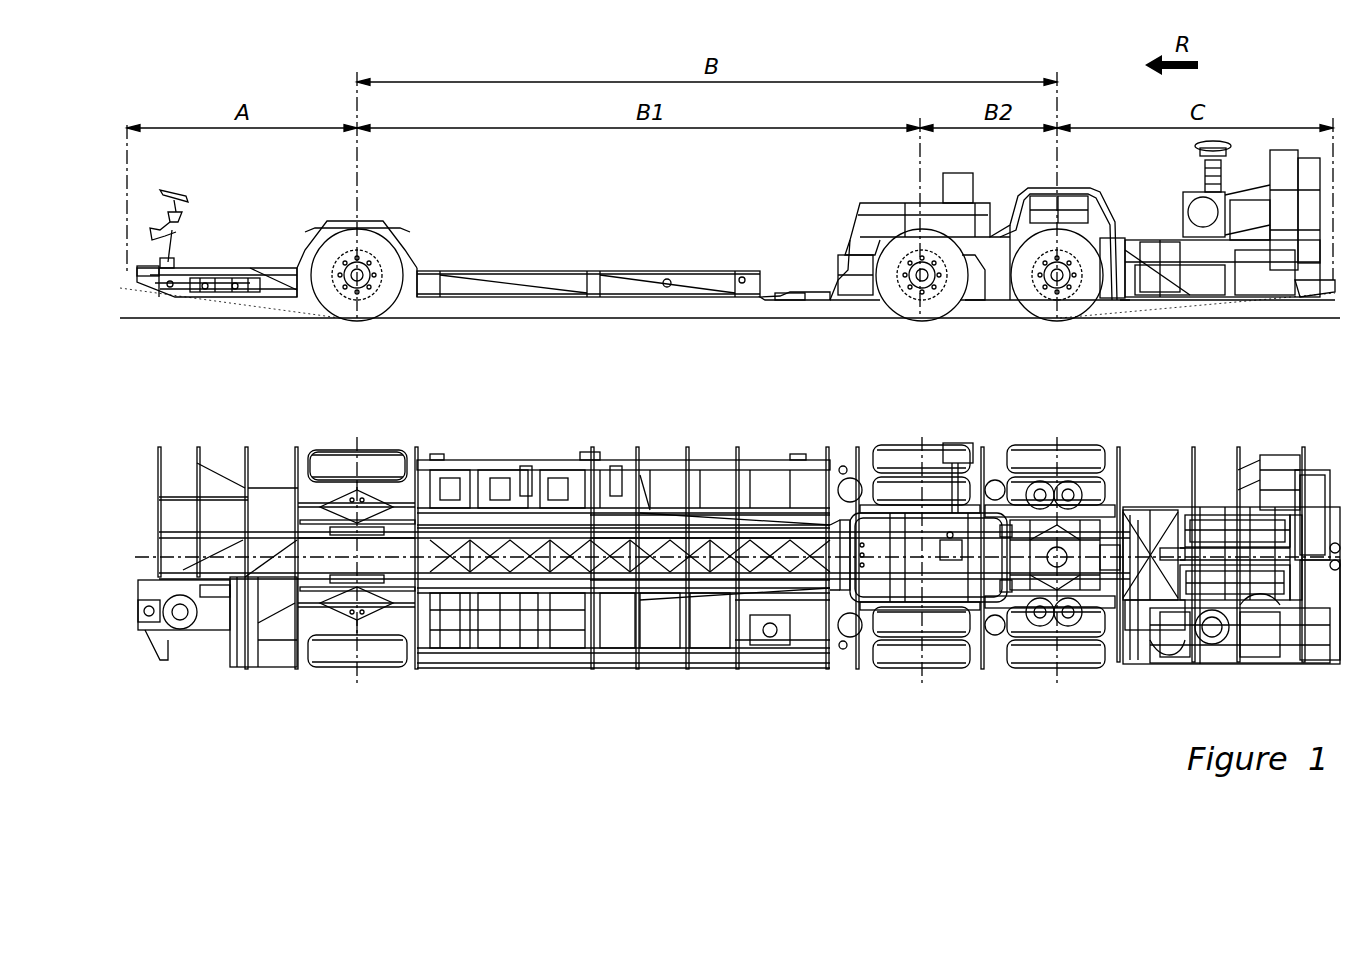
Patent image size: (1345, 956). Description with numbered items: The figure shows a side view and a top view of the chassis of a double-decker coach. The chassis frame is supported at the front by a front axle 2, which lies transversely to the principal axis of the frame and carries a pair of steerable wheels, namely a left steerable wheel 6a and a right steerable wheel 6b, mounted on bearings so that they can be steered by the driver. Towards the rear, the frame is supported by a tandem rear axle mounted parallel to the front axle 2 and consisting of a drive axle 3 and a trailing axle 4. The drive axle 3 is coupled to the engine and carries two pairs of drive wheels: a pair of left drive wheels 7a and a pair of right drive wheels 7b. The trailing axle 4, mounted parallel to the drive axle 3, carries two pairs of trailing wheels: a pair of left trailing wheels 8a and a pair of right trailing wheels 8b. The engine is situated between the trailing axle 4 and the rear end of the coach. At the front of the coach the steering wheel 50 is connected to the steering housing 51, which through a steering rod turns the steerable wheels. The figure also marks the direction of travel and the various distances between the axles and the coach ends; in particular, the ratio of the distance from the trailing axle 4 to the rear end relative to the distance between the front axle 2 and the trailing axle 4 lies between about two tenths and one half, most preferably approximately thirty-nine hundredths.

The front axle 2 is at (357, 696).
The drive axle 3 is at (922, 696).
The trailing axle 4 is at (1057, 696).
The left steerable wheel 6a is at (368, 322).
The right steerable wheel 6b is at (330, 658).
The left drive wheel 7a is at (933, 322).
The right drive wheel 7b is at (893, 660).
The left trailing wheel 8a is at (1068, 322).
The right trailing wheel 8b is at (1030, 660).
The steering wheel 50 is at (190, 208).
The steering housing 51 is at (226, 292).